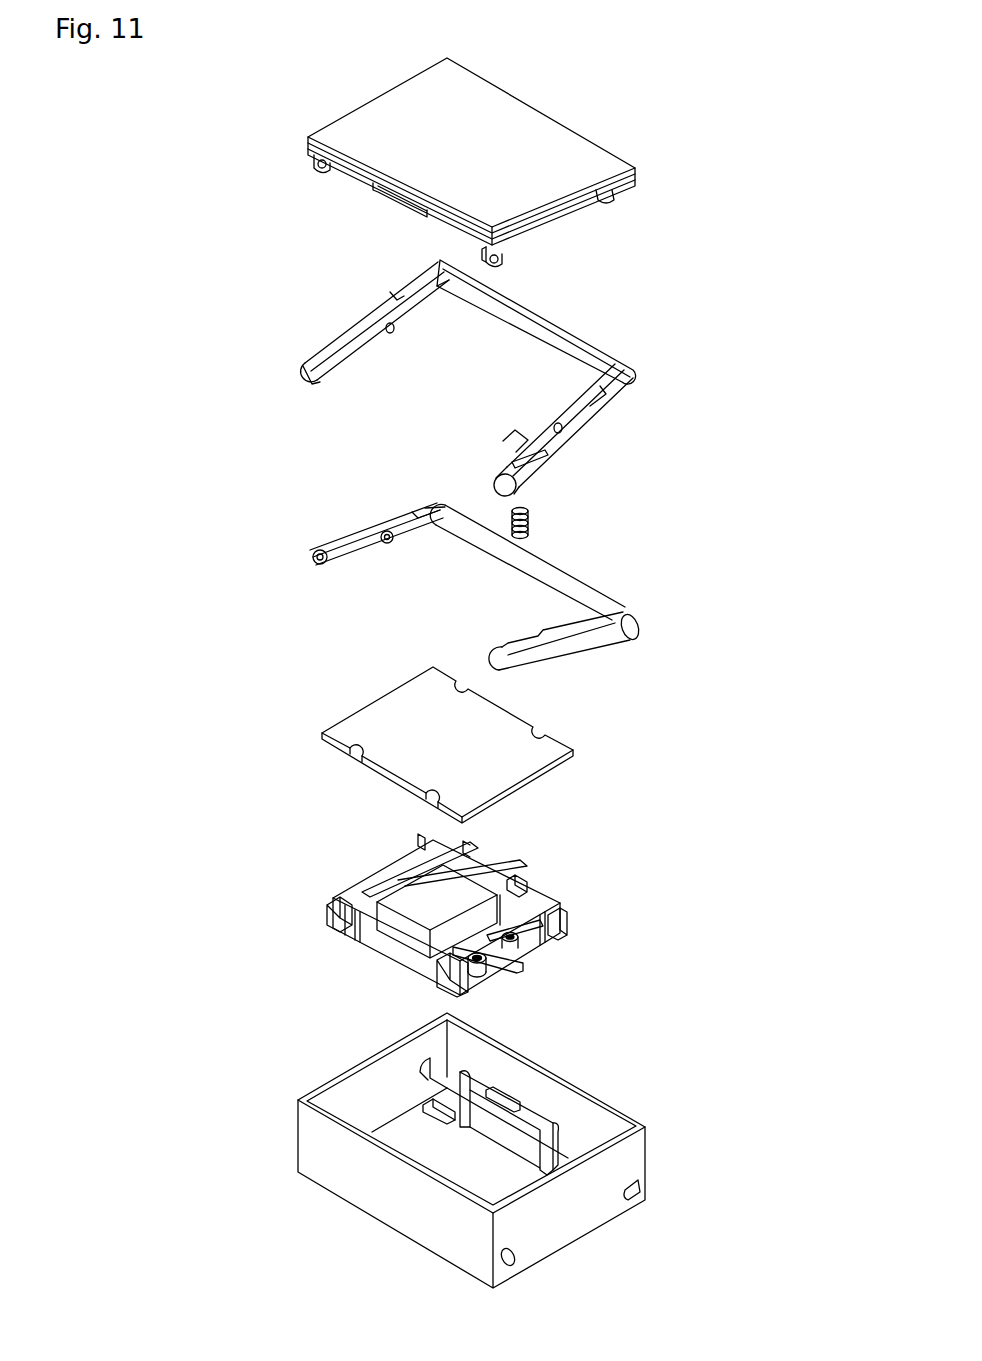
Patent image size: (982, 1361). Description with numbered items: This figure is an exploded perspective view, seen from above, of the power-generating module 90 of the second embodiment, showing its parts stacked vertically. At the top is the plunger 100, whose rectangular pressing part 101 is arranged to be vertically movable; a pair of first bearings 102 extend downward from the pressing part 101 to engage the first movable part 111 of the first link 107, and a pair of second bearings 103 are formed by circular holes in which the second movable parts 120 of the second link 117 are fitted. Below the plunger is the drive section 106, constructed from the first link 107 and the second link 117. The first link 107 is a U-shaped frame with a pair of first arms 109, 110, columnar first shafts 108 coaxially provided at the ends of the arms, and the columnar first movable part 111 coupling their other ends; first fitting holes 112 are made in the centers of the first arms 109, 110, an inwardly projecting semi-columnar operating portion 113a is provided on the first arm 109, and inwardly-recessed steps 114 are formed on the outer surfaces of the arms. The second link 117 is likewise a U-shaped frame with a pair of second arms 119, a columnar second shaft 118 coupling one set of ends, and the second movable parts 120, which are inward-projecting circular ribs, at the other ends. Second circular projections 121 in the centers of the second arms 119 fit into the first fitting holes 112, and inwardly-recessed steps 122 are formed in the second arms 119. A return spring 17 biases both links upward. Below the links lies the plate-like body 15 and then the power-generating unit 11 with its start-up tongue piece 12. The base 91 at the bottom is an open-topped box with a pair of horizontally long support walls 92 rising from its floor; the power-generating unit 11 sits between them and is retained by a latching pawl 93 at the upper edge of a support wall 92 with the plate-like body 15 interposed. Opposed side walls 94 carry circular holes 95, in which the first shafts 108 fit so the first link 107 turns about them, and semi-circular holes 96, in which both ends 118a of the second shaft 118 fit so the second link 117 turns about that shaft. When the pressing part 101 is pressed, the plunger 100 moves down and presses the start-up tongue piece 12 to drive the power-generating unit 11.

The power-generating module 90 is at (188, 117).
The plunger 100 is at (303, 107).
The pressing part 101 is at (588, 150).
The first bearings 102 is at (610, 200).
The second bearings 103 is at (312, 158).
The drive section 106 is at (236, 460).
The first link 107 is at (322, 302).
The first shafts 108 is at (310, 366).
The first arm 109 is at (582, 392).
The first arm 110 is at (395, 296).
The first movable part 111 is at (583, 334).
The first fitting holes 112 is at (572, 428).
The operating portion 113a is at (515, 434).
The steps 114 is at (578, 458).
The second link 117 is at (282, 522).
The second shaft 118 is at (540, 558).
The ends of second shaft 118a is at (432, 500).
The second arms 119 is at (355, 535).
The second movable parts 120 is at (305, 557).
The second circular projections 121 is at (392, 548).
The steps 122 is at (416, 513).
The return spring 17 is at (530, 520).
The plate-like body 15 is at (368, 700).
The power-generating unit 11 is at (360, 862).
The start-up tongue piece 12 is at (535, 963).
The base 91 is at (290, 1060).
The support walls 92 is at (548, 1112).
The latching pawl 93 is at (512, 1093).
The side walls 94 is at (362, 1062).
The circular holes 95 is at (522, 1257).
The semi-circular holes 96 is at (636, 1176).